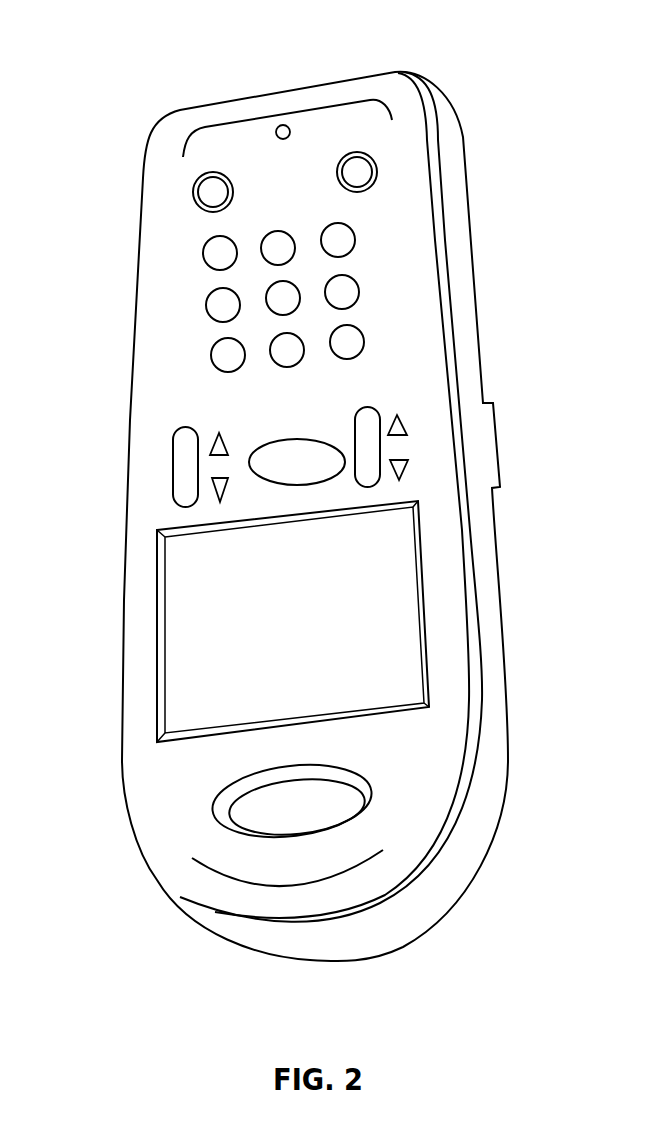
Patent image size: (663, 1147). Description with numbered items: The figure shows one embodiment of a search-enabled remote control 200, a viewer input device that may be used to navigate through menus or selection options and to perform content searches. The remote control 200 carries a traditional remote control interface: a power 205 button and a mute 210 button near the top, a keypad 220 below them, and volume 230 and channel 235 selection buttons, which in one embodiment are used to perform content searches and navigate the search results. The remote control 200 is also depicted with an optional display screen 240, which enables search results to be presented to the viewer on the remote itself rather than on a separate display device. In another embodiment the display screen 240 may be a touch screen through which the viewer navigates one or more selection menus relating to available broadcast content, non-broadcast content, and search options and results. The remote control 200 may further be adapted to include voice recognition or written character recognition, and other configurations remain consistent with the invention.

The remote control 200 is at (474, 67).
The power button 205 is at (193, 202).
The mute button 210 is at (377, 177).
The keypad 220 is at (205, 387).
The volume selection buttons 230 is at (177, 465).
The channel selection buttons 235 is at (368, 410).
The display screen 240 is at (188, 663).